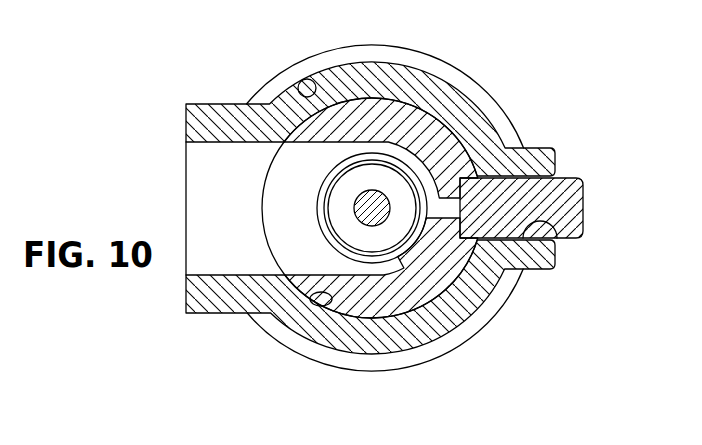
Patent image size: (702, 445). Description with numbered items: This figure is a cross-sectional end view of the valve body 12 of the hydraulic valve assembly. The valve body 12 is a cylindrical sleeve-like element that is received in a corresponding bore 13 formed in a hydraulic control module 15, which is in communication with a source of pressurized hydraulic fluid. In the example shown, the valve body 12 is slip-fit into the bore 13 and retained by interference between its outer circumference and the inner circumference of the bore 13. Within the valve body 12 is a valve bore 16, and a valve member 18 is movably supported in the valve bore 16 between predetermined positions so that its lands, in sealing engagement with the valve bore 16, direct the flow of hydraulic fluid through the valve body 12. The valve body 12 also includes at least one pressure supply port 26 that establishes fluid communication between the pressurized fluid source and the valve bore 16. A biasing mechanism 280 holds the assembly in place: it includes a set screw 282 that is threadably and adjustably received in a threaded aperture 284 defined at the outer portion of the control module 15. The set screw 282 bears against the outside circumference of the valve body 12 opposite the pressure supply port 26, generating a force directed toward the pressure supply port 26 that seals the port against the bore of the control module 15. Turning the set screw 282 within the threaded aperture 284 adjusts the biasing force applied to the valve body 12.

The valve body 12 is at (357, 117).
The bore 13 is at (326, 307).
The hydraulic control module 15 is at (303, 79).
The valve bore 16 is at (400, 253).
The valve member 18 is at (337, 212).
The pressure supply port 26 is at (215, 143).
The biasing mechanism 280 is at (564, 192).
The set screw 282 is at (583, 188).
The threaded aperture 284 is at (556, 236).